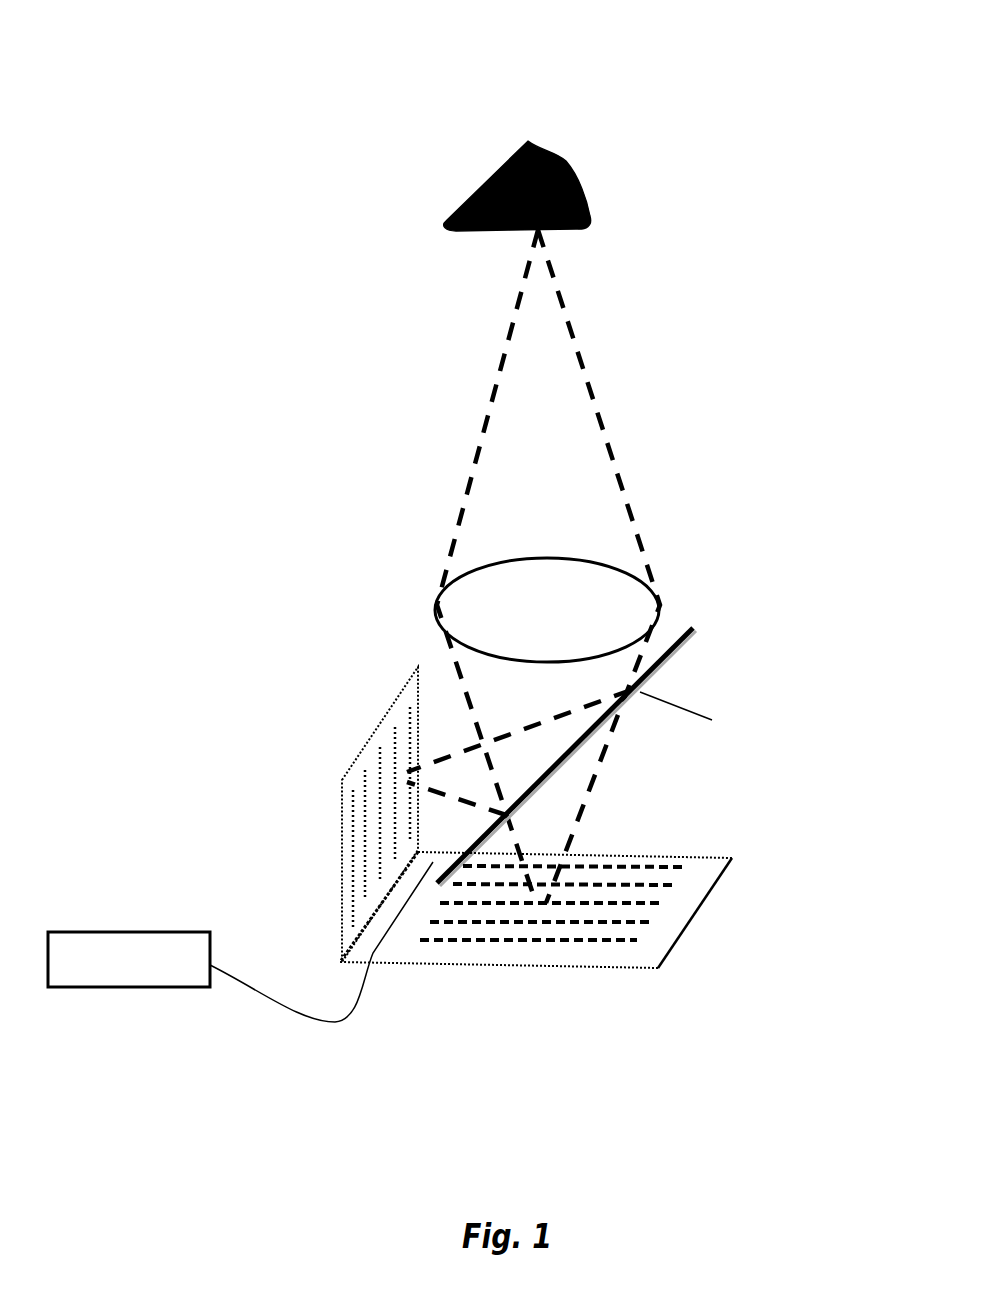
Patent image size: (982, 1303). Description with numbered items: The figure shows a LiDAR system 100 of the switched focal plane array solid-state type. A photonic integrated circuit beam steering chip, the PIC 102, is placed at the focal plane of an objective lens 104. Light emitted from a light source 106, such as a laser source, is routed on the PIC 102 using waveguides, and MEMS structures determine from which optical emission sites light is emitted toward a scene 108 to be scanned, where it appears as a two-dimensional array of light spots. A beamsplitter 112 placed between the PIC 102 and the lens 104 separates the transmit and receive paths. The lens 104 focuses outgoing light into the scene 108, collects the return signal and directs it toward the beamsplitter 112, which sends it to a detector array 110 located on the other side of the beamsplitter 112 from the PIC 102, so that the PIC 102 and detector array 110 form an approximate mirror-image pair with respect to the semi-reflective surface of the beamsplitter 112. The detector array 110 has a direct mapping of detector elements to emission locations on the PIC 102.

The LiDAR system 100 is at (762, 37).
The photonic integrated circuit (PIC) beam steering chip 102 is at (727, 918).
The objective lens 104 is at (668, 608).
The light source 106 is at (130, 908).
The scene 108 is at (613, 183).
The detector array 110 is at (313, 805).
The beamsplitter 112 is at (642, 693).